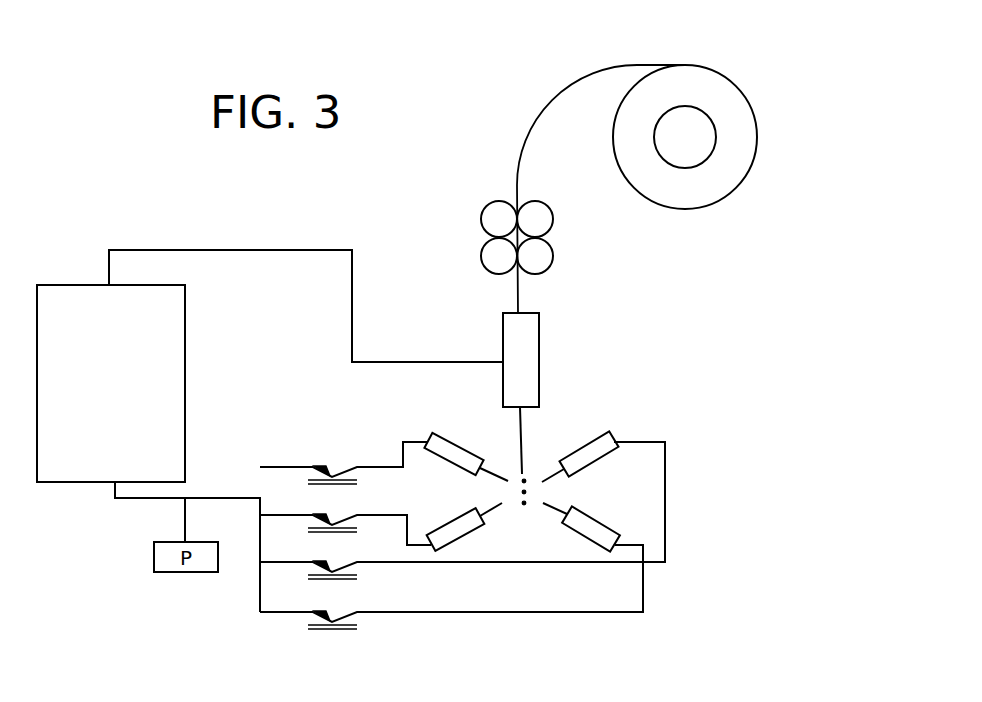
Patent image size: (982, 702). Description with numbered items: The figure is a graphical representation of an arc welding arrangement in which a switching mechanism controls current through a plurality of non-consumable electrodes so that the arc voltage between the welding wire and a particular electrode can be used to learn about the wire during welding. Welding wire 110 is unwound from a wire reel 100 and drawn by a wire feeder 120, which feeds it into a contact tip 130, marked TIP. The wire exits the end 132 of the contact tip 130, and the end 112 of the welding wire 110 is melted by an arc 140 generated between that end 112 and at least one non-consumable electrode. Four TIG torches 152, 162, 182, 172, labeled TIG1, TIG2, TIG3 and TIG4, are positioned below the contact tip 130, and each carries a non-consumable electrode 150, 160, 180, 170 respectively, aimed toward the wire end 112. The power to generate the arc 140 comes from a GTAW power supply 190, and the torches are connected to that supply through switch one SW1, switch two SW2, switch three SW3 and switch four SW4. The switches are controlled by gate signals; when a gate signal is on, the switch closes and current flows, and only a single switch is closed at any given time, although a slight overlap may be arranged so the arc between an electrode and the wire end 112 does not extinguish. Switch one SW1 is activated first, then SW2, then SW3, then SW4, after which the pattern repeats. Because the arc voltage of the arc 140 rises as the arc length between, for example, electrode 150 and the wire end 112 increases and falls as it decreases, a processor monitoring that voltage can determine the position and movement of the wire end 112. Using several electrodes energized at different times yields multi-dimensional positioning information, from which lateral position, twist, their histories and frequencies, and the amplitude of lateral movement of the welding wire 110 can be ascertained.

The wire reel 100 is at (743, 108).
The welding wire 110 is at (582, 78).
The wire feeder 120 is at (492, 213).
The contact tip 130 is at (539, 341).
The end of contact tip 132 is at (513, 412).
The end of welding wire 112 is at (528, 468).
The arc 140 is at (513, 484).
The non-consumable electrode 150 is at (494, 473).
The TIG torch 152 is at (448, 467).
The non-consumable electrode 160 is at (490, 510).
The TIG torch 162 is at (467, 533).
The non-consumable electrode 170 is at (551, 509).
The TIG torch 172 is at (600, 518).
The non-consumable electrode 180 is at (556, 476).
The TIG torch 182 is at (607, 458).
The GTAW power supply 190 is at (185, 334).
The TIG torch one TIG1 is at (447, 446).
The TIG torch two TIG2 is at (450, 532).
The TIG torch three TIG3 is at (603, 430).
The TIG torch four TIG4 is at (588, 532).
The contact tip TIP is at (524, 364).
The switch one SW1 is at (344, 462).
The switch two SW2 is at (345, 517).
The switch three SW3 is at (462, 510).
The switch four SW4 is at (451, 587).